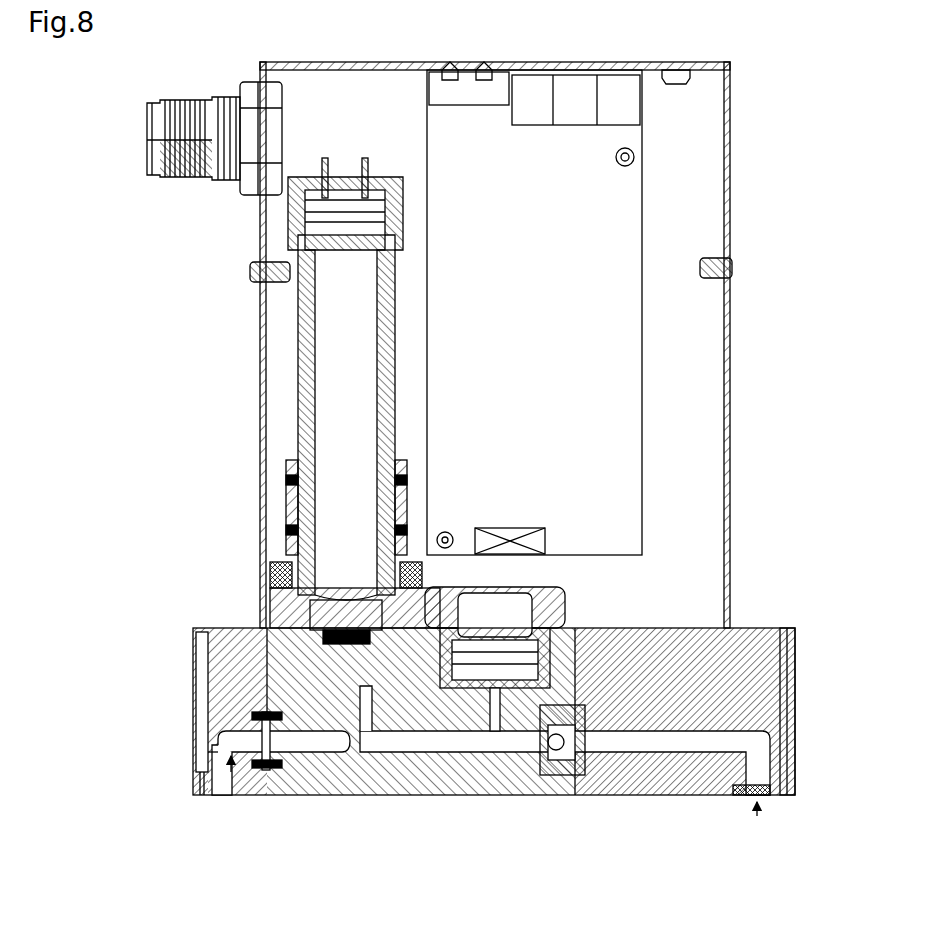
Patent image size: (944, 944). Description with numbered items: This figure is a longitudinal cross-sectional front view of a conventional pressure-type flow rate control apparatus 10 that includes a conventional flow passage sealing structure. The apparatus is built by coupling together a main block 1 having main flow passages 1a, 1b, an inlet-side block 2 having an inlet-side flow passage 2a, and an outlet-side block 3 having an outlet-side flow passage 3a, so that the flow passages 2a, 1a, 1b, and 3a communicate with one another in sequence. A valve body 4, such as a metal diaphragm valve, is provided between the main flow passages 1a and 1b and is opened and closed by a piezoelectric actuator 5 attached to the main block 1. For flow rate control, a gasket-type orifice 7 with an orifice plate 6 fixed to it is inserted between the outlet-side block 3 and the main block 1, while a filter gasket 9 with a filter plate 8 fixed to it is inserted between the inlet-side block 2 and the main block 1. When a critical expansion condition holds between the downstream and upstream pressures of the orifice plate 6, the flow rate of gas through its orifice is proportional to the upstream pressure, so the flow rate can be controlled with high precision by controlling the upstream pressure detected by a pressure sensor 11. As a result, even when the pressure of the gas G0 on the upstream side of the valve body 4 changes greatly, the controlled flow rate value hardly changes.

The pressure-type flow rate control apparatus 10 is at (188, 314).
The piezoelectric actuator 5 is at (292, 418).
The pressure sensor 11 is at (497, 618).
The inlet-side block 2 is at (240, 682).
The outlet-side block 3 is at (690, 680).
The filter gasket 9 is at (250, 748).
The gas G0 is at (226, 800).
The inlet-side flow passage 2a is at (236, 796).
The filter plate 8 is at (290, 796).
The main flow passage 1a is at (322, 796).
The valve body 4 is at (372, 796).
The main block 1 is at (412, 796).
The main flow passage 1b is at (455, 796).
The gasket-type orifice 7 is at (538, 765).
The orifice plate 6 is at (560, 796).
The outlet-side flow passage 3a is at (694, 796).